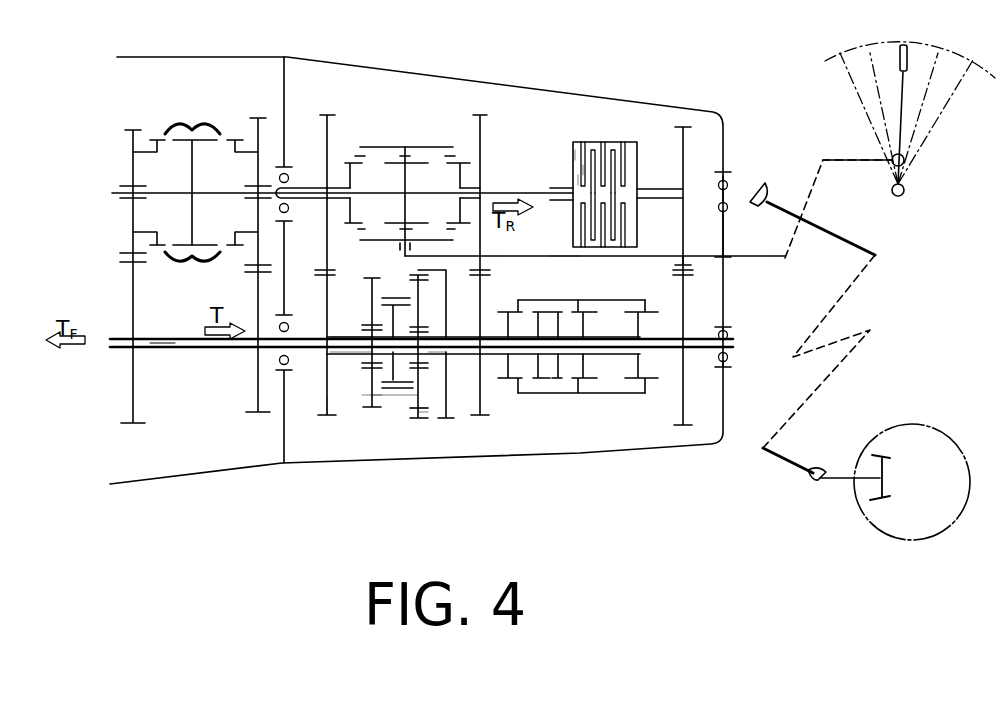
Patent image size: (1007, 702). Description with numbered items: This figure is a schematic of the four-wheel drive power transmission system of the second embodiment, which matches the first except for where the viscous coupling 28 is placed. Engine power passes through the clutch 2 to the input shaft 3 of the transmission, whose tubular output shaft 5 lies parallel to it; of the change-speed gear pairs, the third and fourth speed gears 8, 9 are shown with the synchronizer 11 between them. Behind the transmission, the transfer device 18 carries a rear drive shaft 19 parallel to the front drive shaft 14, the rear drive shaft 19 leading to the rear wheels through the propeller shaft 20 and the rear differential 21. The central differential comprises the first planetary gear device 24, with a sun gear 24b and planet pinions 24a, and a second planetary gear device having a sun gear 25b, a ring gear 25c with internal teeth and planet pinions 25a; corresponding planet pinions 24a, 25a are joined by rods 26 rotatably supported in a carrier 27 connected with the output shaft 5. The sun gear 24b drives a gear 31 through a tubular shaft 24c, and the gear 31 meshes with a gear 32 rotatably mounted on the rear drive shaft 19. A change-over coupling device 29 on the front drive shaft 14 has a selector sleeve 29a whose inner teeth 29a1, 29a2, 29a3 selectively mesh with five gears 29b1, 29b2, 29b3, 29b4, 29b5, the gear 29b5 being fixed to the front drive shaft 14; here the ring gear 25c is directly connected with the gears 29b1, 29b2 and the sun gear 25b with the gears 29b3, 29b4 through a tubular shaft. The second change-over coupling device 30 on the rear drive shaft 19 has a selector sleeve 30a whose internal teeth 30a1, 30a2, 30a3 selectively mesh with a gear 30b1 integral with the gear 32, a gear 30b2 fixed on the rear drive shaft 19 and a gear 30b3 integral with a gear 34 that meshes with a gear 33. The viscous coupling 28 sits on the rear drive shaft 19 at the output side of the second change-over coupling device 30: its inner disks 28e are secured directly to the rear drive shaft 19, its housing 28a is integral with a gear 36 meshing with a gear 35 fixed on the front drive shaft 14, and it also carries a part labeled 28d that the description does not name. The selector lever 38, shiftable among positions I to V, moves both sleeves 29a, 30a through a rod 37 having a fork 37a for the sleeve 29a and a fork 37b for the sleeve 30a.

The clutch 2 is at (455, 356).
The input shaft 3 is at (118, 192).
The tubular output shaft 5 is at (242, 365).
The change-speed gear 8 is at (132, 128).
The change-speed gear 9 is at (270, 103).
The synchronizer 11 is at (202, 103).
The front drive shaft 14 is at (163, 352).
The transfer device 18 is at (500, 43).
The rear drive shaft 19 is at (515, 199).
The propeller shaft 20 is at (870, 248).
The rear differential 21 is at (860, 520).
The first planetary gear device 24 is at (379, 455).
The planet pinions 24a is at (380, 383).
The sun gear 24b is at (370, 356).
The tubular shaft 24c is at (334, 332).
The planet pinions 25a is at (412, 402).
The sun gear 25b is at (428, 360).
The ring gear 25c is at (422, 422).
The rods 26 is at (372, 398).
The carrier 27 is at (385, 320).
The viscous coupling 28 is at (616, 120).
The housing 28a is at (585, 142).
The clutch plate 28d is at (583, 160).
The inner disks 28e is at (578, 172).
The change-over coupling device 29 is at (581, 378).
The selector sleeve 29a is at (588, 298).
The inner teeth 29a1 is at (514, 304).
The inner teeth 29a2 is at (567, 300).
The inner teeth 29a3 is at (658, 298).
The gear 29b1 is at (510, 385).
The gear 29b2 is at (540, 385).
The gear 29b3 is at (578, 392).
The gear 29b4 is at (610, 380).
The gear 29b5 is at (660, 382).
The second change-over coupling device 30 is at (414, 96).
The selector sleeve 30a is at (418, 140).
The internal teeth 30a1 is at (395, 248).
The internal teeth 30a2 is at (398, 236).
The internal teeth 30a3 is at (448, 238).
The gear 30b1 is at (352, 160).
The gear 30b2 is at (402, 145).
The gear 30b3 is at (460, 160).
The gear 31 is at (318, 408).
The gear 32 is at (322, 262).
The gear 33 is at (468, 312).
The gear 34 is at (483, 250).
The gear 35 is at (702, 312).
The gear 36 is at (680, 168).
The rod 37 is at (410, 258).
The fork 37a is at (560, 257).
The fork 37b is at (355, 341).
The selector lever 38 is at (905, 165).